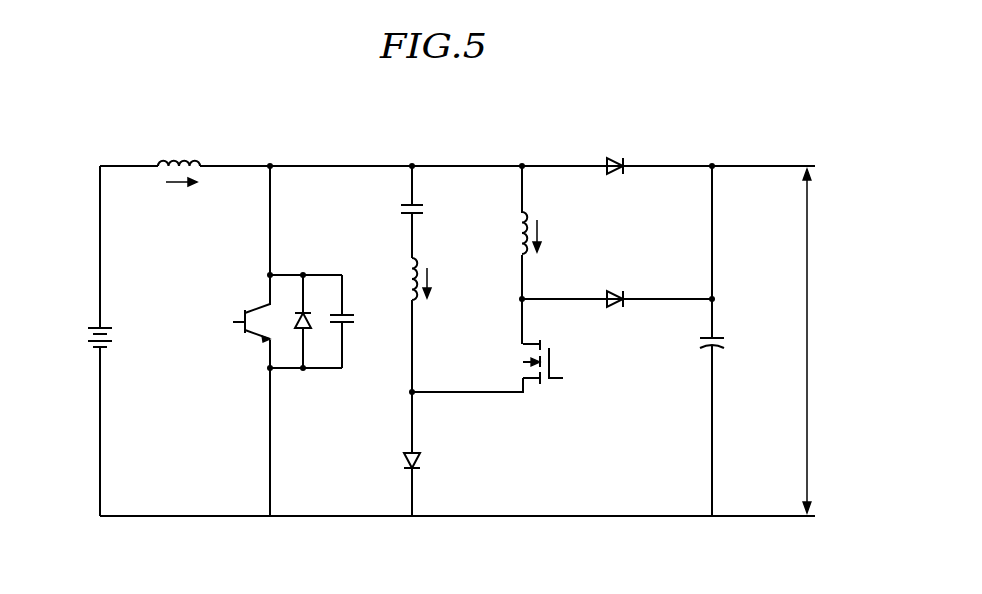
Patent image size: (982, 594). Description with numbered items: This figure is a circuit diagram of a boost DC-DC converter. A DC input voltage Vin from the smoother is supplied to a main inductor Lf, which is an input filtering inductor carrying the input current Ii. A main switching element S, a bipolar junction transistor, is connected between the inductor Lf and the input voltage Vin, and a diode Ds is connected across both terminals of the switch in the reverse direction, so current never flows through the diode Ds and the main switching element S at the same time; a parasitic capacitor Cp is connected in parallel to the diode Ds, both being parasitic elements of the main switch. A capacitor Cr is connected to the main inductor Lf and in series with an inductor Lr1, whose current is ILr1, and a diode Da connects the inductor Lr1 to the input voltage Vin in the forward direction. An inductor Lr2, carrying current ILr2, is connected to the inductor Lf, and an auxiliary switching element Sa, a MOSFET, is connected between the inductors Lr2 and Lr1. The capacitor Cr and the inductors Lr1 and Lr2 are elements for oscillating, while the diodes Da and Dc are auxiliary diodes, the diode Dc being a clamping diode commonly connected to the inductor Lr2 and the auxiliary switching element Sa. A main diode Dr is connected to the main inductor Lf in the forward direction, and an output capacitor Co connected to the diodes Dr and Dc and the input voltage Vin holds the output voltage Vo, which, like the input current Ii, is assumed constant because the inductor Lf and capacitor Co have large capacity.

The main inductor Lf is at (179, 150).
The input current Ii is at (181, 193).
The input voltage Vin is at (85, 333).
The main switching element S is at (285, 341).
The diode Ds is at (310, 321).
The parasitic capacitor Cp is at (354, 321).
The capacitor Cr is at (402, 212).
The inductor Lr1 is at (398, 325).
The current through inductor Lr1 ILr1 is at (441, 283).
The diode Da is at (424, 454).
The inductor Lr2 is at (507, 255).
The current through inductor Lr2 ILr2 is at (554, 236).
The auxiliary switching element Sa is at (550, 362).
The main diode Dr is at (615, 155).
The diode Dc is at (617, 288).
The output capacitor Co is at (701, 341).
The output voltage Vo is at (814, 342).